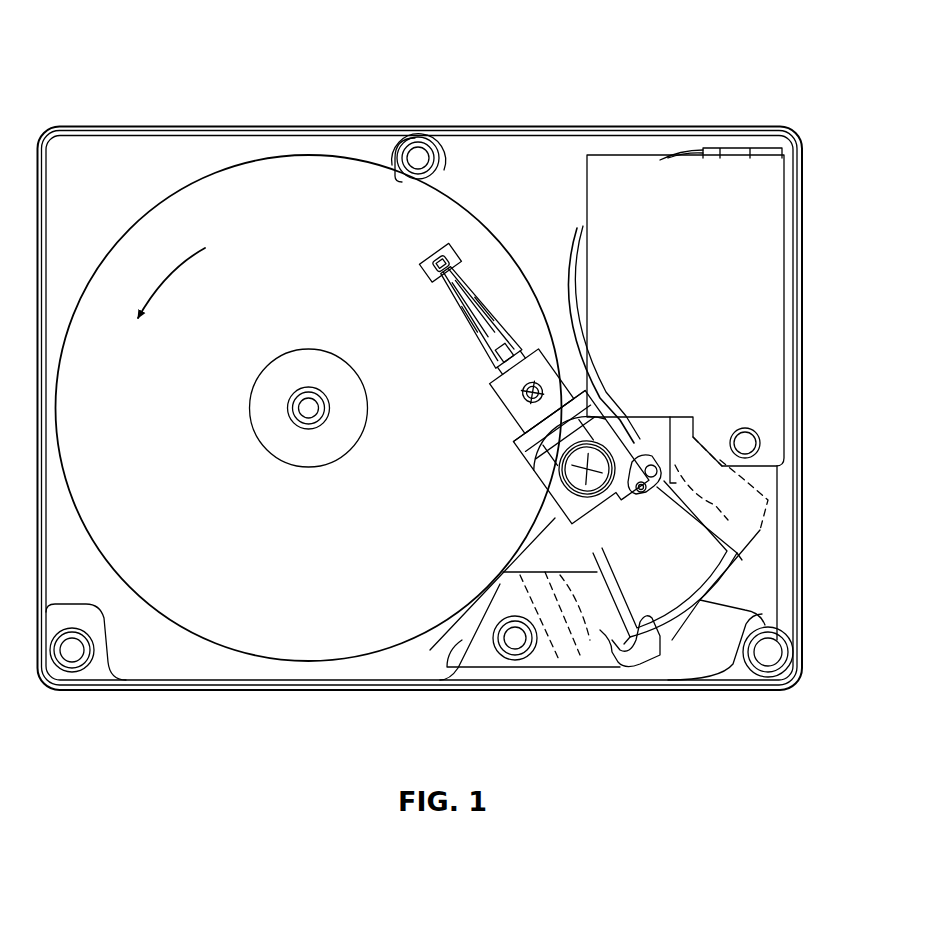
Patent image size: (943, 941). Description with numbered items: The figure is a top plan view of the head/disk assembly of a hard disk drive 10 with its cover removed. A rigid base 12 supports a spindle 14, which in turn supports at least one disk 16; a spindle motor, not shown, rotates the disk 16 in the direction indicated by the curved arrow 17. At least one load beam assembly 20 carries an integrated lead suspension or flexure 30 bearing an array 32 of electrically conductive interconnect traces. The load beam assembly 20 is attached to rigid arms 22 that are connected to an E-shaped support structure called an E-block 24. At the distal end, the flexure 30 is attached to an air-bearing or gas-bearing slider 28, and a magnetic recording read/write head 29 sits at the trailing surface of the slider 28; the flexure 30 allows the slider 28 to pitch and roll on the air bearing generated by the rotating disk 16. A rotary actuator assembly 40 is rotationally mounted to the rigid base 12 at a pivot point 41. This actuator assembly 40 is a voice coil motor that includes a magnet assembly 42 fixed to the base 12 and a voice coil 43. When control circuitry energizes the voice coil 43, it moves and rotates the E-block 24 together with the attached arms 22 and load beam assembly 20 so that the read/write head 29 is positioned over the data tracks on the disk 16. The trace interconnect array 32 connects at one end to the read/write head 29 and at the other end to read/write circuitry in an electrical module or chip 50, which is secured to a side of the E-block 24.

The hard disk drive 10 is at (116, 64).
The rigid base 12 is at (190, 691).
The spindle 14 is at (262, 372).
The disk 16 is at (296, 650).
The curved arrow 17 is at (178, 272).
The load beam assembly 20 is at (514, 379).
The rigid arms 22 is at (528, 388).
The E-block 24 is at (580, 459).
The slider 28 is at (440, 262).
The read/write head 29 is at (441, 264).
The flexure 30 is at (477, 314).
The array of interconnect traces 32 is at (473, 308).
The rotary actuator assembly 40 is at (542, 527).
The pivot point 41 is at (580, 461).
The magnet assembly 42 is at (695, 445).
The voice coil 43 is at (762, 560).
The electrical module or chip 50 is at (628, 428).